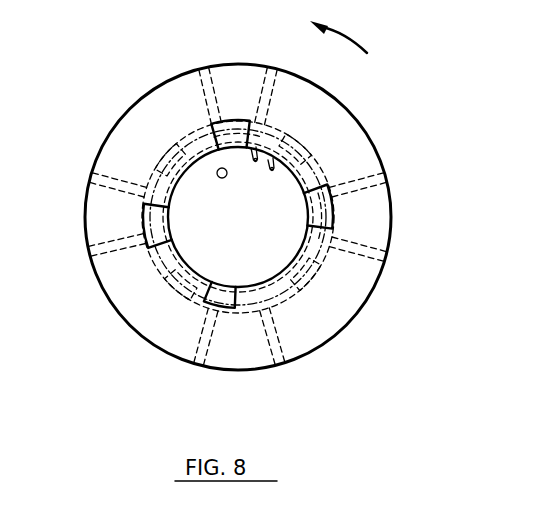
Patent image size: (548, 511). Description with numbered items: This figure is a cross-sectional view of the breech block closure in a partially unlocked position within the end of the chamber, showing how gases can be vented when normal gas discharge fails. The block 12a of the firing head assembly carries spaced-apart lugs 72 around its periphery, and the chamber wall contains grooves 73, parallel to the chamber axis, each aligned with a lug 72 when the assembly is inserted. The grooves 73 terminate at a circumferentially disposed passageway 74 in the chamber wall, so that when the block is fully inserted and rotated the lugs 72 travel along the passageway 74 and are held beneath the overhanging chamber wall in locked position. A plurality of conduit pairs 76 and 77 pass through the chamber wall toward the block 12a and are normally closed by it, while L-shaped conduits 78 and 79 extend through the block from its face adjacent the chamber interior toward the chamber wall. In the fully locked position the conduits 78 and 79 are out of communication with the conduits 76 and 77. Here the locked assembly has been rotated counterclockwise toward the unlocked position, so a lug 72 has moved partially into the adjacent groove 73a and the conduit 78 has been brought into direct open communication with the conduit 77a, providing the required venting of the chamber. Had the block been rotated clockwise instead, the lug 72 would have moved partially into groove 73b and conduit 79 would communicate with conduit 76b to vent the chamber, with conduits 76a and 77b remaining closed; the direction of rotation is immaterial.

The block 12a is at (275, 248).
The lugs 72 is at (257, 158).
The grooves 73 is at (245, 298).
The groove 73a is at (242, 132).
The groove 73b is at (323, 203).
The circumferentially disposed passageway 74 is at (298, 142).
The conduits 76 is at (93, 252).
The conduit 76a is at (203, 66).
The conduit 76b is at (335, 188).
The conduits 77 is at (95, 174).
The conduit 77a is at (277, 69).
The conduit 77b is at (372, 248).
The conduit 78 is at (255, 157).
The conduit 79 is at (270, 170).